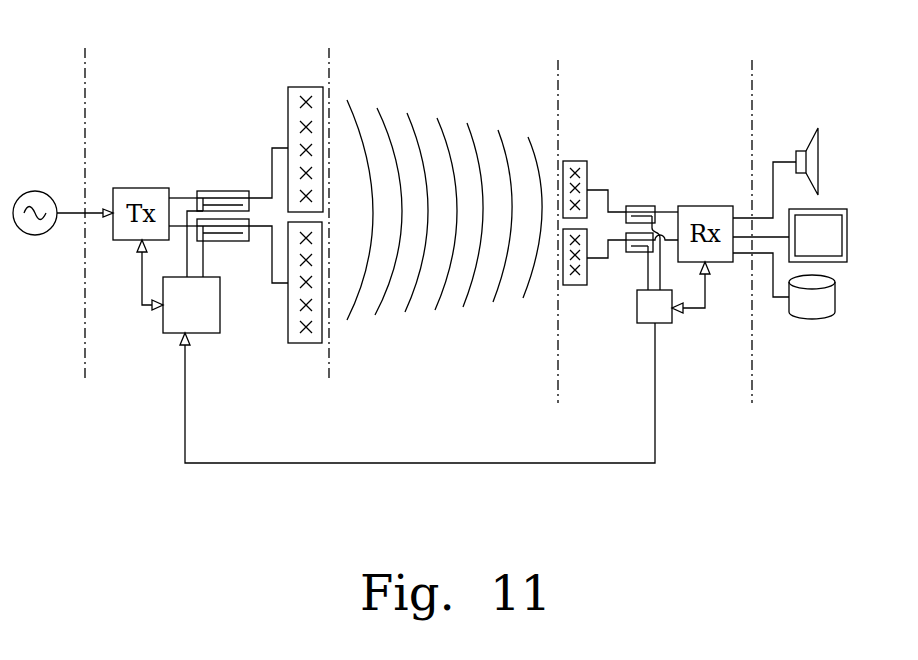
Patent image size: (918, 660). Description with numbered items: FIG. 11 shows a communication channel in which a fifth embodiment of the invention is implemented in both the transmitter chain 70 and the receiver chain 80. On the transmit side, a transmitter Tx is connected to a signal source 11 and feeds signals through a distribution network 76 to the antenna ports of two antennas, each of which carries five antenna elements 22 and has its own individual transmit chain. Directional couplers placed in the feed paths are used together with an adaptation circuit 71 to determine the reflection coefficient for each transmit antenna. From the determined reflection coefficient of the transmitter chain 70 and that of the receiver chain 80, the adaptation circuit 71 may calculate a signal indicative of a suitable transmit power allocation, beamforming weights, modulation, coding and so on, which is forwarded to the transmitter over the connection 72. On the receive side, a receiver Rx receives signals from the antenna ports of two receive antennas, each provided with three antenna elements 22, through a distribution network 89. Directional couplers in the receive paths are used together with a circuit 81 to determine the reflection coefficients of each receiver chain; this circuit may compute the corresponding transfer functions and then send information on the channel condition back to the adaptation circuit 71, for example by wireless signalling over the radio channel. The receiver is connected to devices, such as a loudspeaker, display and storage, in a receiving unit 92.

The signal source 11 is at (37, 235).
The transmitter chain 70 is at (210, 53).
The distribution network 76 is at (198, 153).
The antenna elements 22 is at (308, 122).
The connection 72 is at (142, 268).
The adaptation circuit 71 is at (191, 305).
The receiver chain 80 is at (678, 88).
The distribution network 89 is at (635, 192).
The circuit 81 is at (667, 318).
The receiving unit 92 is at (862, 423).